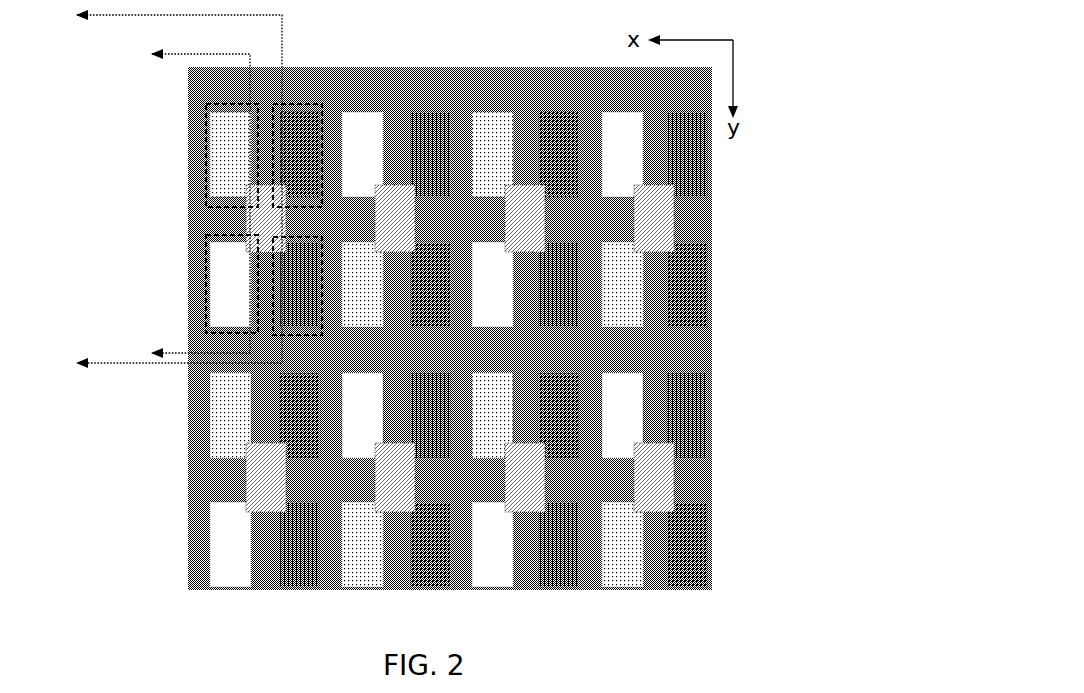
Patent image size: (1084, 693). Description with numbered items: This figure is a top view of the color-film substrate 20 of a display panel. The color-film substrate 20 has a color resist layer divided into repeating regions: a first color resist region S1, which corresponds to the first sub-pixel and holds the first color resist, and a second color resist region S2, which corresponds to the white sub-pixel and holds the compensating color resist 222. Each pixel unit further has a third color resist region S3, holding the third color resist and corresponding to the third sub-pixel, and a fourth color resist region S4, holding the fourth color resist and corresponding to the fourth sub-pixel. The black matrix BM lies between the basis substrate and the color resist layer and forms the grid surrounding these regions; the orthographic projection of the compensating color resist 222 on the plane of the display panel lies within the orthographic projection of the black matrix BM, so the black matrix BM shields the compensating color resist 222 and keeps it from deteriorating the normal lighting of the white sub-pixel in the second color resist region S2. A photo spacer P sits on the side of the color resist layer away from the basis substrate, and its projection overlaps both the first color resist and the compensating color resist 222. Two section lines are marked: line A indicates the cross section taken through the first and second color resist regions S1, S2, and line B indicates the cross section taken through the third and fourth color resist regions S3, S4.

The color-film substrate 20 is at (435, 300).
The black matrix BM is at (463, 82).
The first color resist region S1 is at (206, 150).
The second color resist region S2 is at (206, 277).
The third color resist region S3 is at (306, 105).
The fourth color resist region S4 is at (308, 337).
The photo spacer P is at (257, 206).
The compensating color resist 222 is at (243, 250).
The line AA' A is at (199, 192).
The line BB' B is at (178, 189).